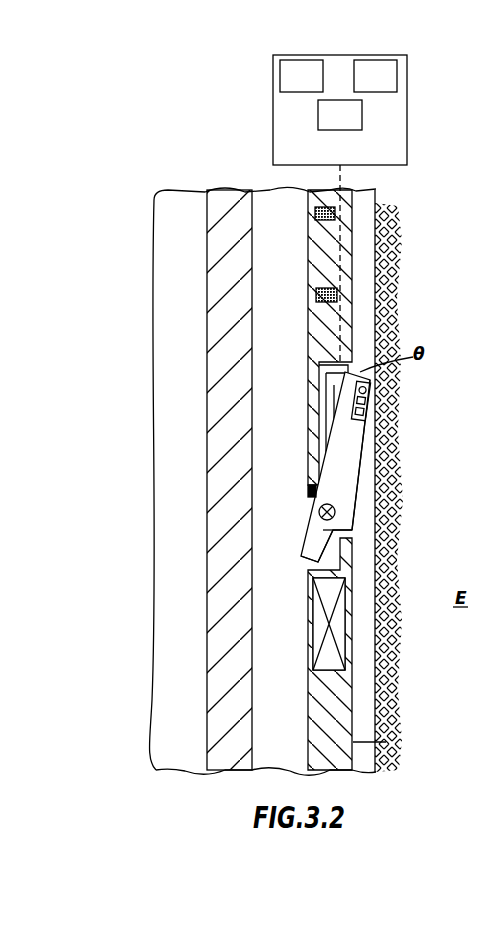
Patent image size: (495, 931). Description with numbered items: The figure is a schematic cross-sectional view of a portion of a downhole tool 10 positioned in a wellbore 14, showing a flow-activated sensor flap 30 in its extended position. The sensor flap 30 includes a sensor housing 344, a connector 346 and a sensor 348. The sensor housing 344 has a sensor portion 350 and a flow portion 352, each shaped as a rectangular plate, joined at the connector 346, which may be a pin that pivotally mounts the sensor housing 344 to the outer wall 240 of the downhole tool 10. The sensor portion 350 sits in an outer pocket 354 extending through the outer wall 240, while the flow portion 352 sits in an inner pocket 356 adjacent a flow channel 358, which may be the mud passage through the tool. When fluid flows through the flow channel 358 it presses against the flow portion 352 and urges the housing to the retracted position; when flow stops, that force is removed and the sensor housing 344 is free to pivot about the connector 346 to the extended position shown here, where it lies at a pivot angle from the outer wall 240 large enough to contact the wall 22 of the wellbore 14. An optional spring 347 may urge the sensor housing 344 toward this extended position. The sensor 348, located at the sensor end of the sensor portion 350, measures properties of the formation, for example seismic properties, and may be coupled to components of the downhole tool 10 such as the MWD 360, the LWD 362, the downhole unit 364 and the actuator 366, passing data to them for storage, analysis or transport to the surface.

The downhole tool 10 is at (218, 188).
The wellbore 14 is at (377, 203).
The wall of the wellbore 22 is at (384, 245).
The sensor flap 30 is at (391, 467).
The outer wall 240 is at (386, 743).
The sensor housing 344 is at (366, 412).
The connector 346 is at (336, 512).
The spring 347 is at (316, 488).
The sensor 348 is at (373, 387).
The sensor portion 350 is at (350, 457).
The flow portion 352 is at (300, 553).
The outer pocket 354 is at (322, 406).
The inner pocket 356 is at (352, 533).
The flow channel 358 is at (248, 262).
The MWD 360 is at (321, 87).
The LWD 362 is at (395, 87).
The downhole unit 364 is at (358, 158).
The actuator 366 is at (357, 126).